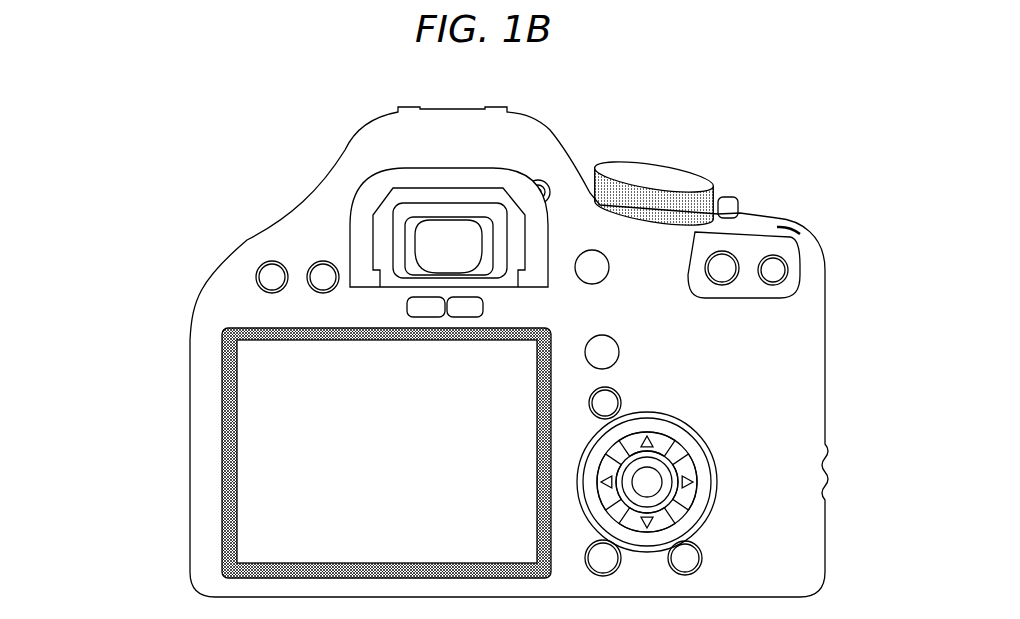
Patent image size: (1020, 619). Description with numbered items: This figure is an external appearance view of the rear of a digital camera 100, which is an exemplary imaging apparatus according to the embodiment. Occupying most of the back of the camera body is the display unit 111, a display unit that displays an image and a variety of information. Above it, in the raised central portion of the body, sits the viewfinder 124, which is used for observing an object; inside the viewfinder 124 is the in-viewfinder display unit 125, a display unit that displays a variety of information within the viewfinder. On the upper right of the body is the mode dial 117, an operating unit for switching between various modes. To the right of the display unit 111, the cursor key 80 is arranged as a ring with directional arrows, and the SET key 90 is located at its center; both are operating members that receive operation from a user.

The digital camera 100 is at (567, 133).
The display unit 111 is at (272, 390).
The mode dial 117 is at (685, 173).
The viewfinder 124 is at (415, 225).
The in-viewfinder display unit 125 is at (407, 247).
The cursor key 80 is at (685, 460).
The SET key 90 is at (650, 483).